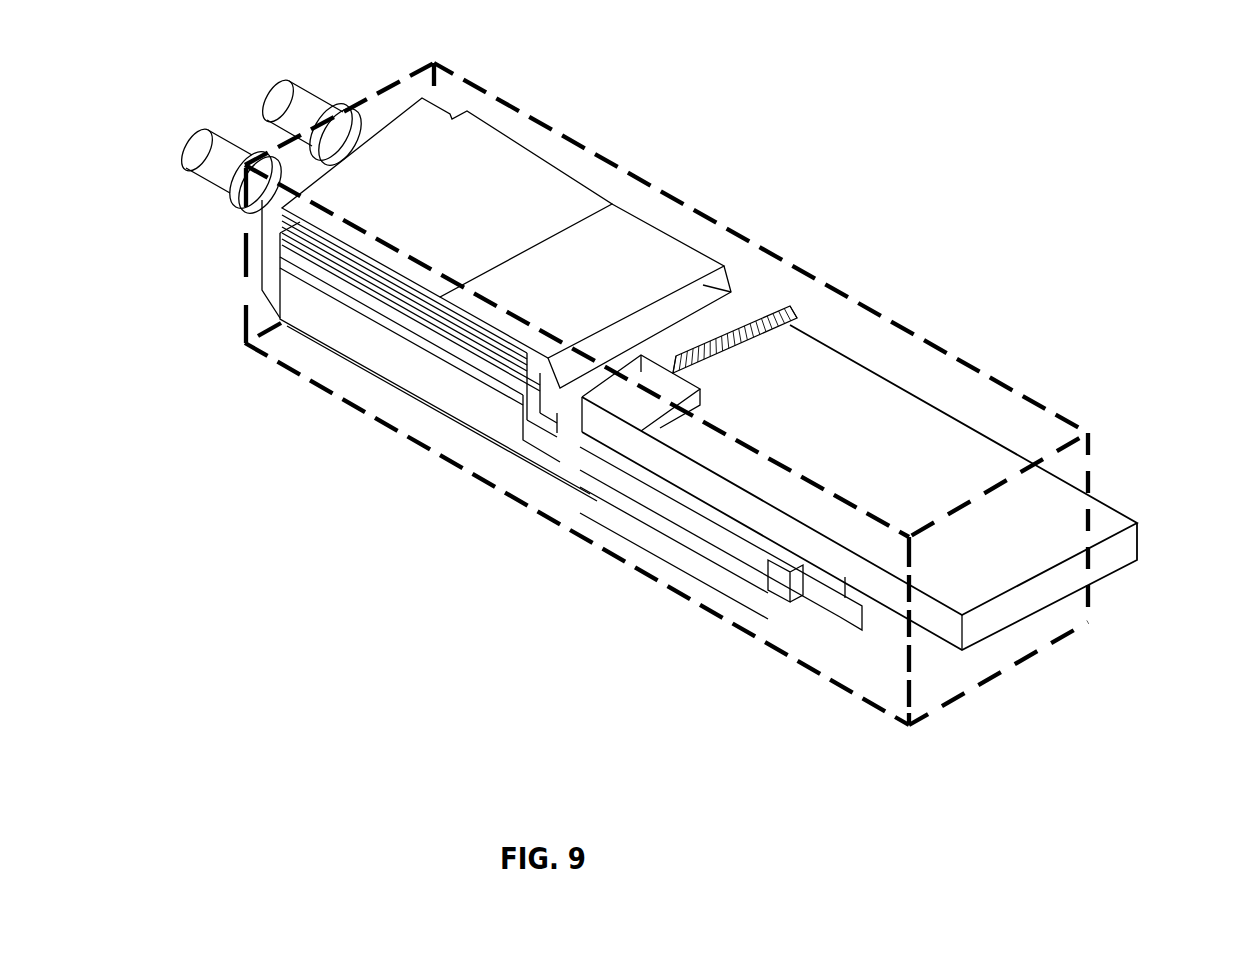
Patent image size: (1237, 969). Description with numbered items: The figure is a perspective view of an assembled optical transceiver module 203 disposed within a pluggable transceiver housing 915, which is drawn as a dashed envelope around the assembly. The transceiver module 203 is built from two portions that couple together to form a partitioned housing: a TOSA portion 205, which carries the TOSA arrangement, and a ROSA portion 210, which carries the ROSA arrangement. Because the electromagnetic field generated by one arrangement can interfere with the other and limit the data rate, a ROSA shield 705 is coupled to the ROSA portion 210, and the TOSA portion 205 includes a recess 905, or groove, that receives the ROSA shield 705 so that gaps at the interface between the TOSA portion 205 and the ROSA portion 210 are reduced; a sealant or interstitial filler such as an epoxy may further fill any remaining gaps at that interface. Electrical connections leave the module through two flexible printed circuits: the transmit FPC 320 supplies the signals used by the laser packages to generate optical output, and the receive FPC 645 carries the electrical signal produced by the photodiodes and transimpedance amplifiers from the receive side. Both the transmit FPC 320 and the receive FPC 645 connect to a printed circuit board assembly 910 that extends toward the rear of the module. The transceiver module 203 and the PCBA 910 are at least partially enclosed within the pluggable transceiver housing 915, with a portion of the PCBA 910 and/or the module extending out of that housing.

The transceiver module 203 is at (677, 138).
The ROSA portion 210 is at (443, 130).
The TOSA portion 205 is at (408, 387).
The receive FPC 645 is at (732, 315).
The printed circuit board assembly 910 is at (1137, 527).
The transmit FPC 320 is at (610, 453).
The ROSA shield 705 is at (558, 420).
The recess 905 is at (517, 447).
The pluggable transceiver housing 915 is at (651, 577).